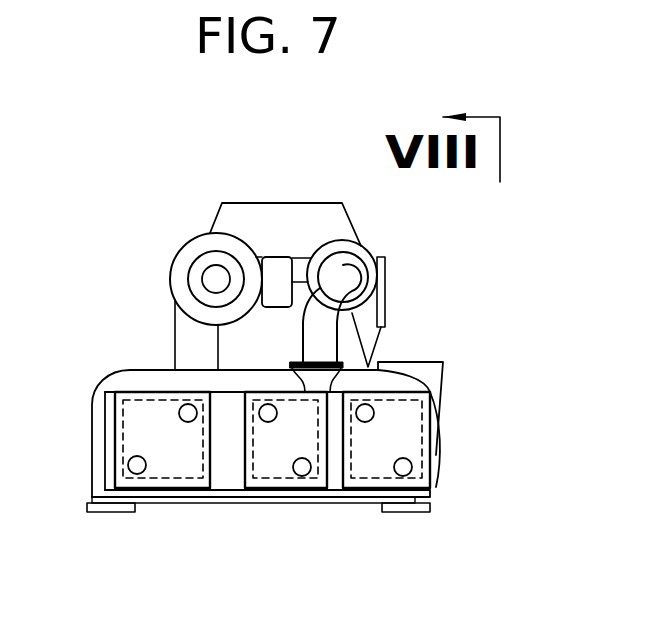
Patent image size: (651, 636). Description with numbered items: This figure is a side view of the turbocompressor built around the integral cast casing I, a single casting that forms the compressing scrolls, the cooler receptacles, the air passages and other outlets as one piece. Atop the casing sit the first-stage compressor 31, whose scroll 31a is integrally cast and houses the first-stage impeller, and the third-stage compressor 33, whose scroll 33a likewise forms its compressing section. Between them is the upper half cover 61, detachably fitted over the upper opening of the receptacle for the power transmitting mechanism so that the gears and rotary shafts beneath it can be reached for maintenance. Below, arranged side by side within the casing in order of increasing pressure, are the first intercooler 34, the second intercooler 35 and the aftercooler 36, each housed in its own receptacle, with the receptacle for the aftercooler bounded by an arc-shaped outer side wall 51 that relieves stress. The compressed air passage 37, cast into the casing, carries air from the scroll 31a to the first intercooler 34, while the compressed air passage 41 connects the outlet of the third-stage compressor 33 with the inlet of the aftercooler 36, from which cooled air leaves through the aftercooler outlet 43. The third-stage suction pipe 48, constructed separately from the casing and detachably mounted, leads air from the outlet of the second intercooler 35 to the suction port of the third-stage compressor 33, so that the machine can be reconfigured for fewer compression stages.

The integral cast casing I is at (110, 355).
The first-stage compressor 31 is at (165, 242).
The scroll 31a is at (197, 233).
The third-stage compressor 33 is at (368, 238).
The scroll 33a is at (388, 260).
The first intercooler 34 is at (168, 470).
The second intercooler 35 is at (283, 470).
The aftercooler 36 is at (368, 470).
The compressed air passage 37 is at (185, 338).
The compressed air passage 41 is at (353, 345).
The aftercooler outlet 43 is at (422, 358).
The third-stage suction pipe 48 is at (332, 316).
The outer side wall 51 is at (443, 437).
The upper half cover 61 is at (320, 203).